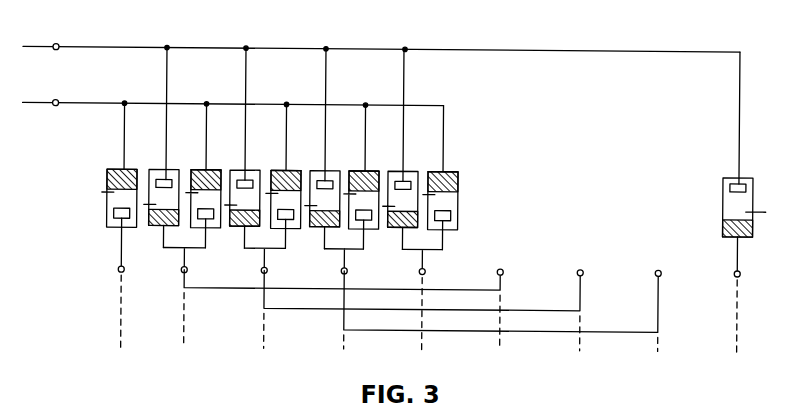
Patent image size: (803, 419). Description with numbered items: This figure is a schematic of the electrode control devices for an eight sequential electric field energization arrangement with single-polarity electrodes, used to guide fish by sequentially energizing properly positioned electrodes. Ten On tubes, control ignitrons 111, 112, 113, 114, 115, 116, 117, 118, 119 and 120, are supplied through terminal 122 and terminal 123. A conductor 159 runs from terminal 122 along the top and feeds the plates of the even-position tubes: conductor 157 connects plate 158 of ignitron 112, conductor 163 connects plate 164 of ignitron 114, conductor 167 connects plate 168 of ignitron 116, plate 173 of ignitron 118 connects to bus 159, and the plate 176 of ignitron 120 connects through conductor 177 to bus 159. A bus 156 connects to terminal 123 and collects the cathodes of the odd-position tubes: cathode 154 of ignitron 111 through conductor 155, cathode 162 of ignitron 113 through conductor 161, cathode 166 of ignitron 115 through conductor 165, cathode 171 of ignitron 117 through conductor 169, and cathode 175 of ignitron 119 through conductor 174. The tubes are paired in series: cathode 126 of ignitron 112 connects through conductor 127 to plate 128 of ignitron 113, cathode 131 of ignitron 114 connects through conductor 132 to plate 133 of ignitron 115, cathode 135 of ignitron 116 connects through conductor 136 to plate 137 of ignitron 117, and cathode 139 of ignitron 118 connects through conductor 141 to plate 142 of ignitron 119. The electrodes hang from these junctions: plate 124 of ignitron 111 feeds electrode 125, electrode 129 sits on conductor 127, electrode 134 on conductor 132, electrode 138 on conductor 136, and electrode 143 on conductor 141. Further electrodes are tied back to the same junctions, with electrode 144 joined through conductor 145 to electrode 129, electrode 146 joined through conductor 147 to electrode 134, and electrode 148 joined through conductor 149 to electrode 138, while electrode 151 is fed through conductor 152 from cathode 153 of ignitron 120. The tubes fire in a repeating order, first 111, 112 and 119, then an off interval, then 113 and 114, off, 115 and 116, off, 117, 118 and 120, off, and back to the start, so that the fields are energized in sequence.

The control ignitron 111 is at (108, 180).
The control ignitron 112 is at (153, 172).
The control ignitron 113 is at (204, 168).
The control ignitron 114 is at (245, 165).
The control ignitron 115 is at (284, 168).
The control ignitron 116 is at (325, 168).
The control ignitron 117 is at (363, 168).
The ignitron 118 is at (403, 168).
The ignitron 119 is at (443, 168).
The ignitron 120 is at (724, 180).
The terminal 122 is at (58, 45).
The terminal 123 is at (58, 101).
The plate 124 is at (117, 222).
The electrode 125 is at (98, 311).
The cathode 126 is at (152, 227).
The conductor 127 is at (188, 252).
The plate 128 is at (214, 222).
The electrode 129 is at (186, 302).
The cathode 131 is at (264, 250).
The conductor 132 is at (270, 250).
The plate 133 is at (326, 227).
The electrode 134 is at (264, 322).
The cathode 135 is at (344, 250).
The conductor 136 is at (364, 240).
The plate 137 is at (368, 222).
The electrode 138 is at (339, 346).
The cathode 139 is at (422, 250).
The conductor 141 is at (428, 250).
The plate 142 is at (452, 222).
The electrode 143 is at (425, 346).
The electrode 144 is at (504, 346).
The conductor 145 is at (366, 288).
The electrode 146 is at (584, 346).
The conductor 147 is at (506, 307).
The electrode 148 is at (662, 346).
The conductor 149 is at (590, 328).
The electrode 151 is at (739, 346).
The conductor 152 is at (734, 238).
The cathode 153 is at (755, 230).
The cathode 154 is at (106, 190).
The conductor 155 is at (127, 128).
The bus 156 is at (143, 103).
The conductor 157 is at (168, 91).
The plate 158 is at (166, 179).
The conductor 159 is at (198, 47).
The conductor 161 is at (207, 128).
The cathode 162 is at (209, 172).
The conductor 163 is at (247, 128).
The plate 164 is at (247, 179).
The conductor 165 is at (288, 128).
The cathode 166 is at (289, 172).
The conductor 167 is at (328, 91).
The plate 168 is at (327, 179).
The conductor 169 is at (367, 128).
The cathode 171 is at (368, 172).
The plate 173 is at (405, 179).
The conductor 174 is at (445, 130).
The cathode 175 is at (463, 183).
The contact 176 is at (745, 180).
The conductor 177 is at (739, 105).